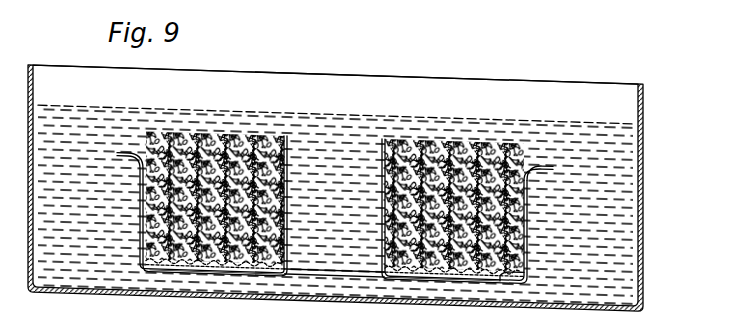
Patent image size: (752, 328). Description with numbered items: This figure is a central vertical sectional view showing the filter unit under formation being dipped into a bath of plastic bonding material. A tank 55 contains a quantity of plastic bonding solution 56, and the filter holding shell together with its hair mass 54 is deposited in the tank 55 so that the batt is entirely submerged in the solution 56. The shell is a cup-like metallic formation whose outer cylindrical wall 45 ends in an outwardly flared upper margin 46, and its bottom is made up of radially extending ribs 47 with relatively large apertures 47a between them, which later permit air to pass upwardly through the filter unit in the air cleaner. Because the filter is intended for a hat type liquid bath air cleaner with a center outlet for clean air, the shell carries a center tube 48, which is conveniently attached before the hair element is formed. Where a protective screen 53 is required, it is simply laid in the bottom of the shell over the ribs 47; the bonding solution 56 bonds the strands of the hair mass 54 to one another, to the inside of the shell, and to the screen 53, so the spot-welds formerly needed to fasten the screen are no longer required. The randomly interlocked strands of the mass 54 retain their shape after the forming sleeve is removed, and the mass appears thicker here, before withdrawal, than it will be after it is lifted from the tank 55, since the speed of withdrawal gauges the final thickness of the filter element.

The outer cylindrical wall 45 is at (530, 213).
The outwardly flared upper margin 46 is at (547, 168).
The radially extending ribs 47 is at (420, 273).
The apertures 47a is at (487, 278).
The center tube 48 is at (384, 137).
The protective screen 53 is at (467, 275).
The hair mass 54 is at (462, 138).
The tank 55 is at (641, 240).
The plastic bonding solution 56 is at (618, 174).